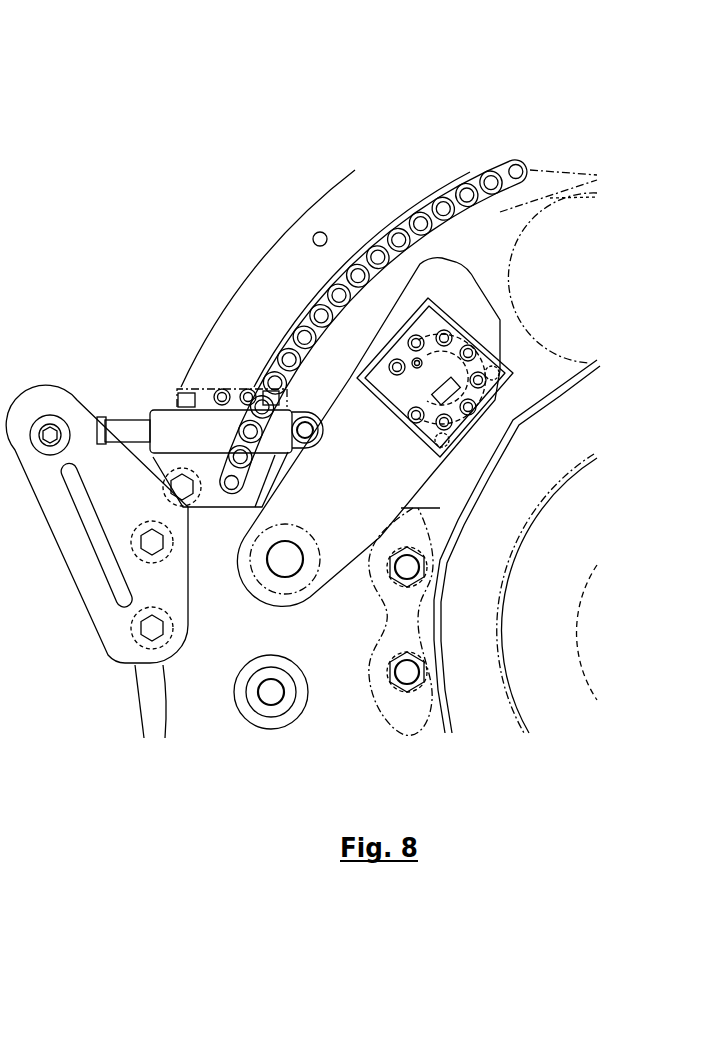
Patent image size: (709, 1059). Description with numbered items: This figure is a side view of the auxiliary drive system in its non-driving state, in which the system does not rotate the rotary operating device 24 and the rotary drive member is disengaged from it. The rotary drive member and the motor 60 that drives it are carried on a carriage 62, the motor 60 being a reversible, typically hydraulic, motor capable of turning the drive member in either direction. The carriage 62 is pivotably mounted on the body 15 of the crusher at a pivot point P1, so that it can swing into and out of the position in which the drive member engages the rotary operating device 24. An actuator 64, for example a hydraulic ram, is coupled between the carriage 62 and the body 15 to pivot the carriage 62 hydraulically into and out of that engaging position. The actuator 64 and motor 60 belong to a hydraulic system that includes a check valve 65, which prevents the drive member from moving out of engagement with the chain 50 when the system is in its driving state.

The body 15 is at (342, 640).
The rotary operating device 24 is at (262, 242).
The chain 50 is at (430, 212).
The motor 60 is at (442, 382).
The carriage 62 is at (378, 493).
The actuator 64 is at (168, 422).
The check valve 65 is at (218, 392).
The pivot point P1 is at (285, 557).